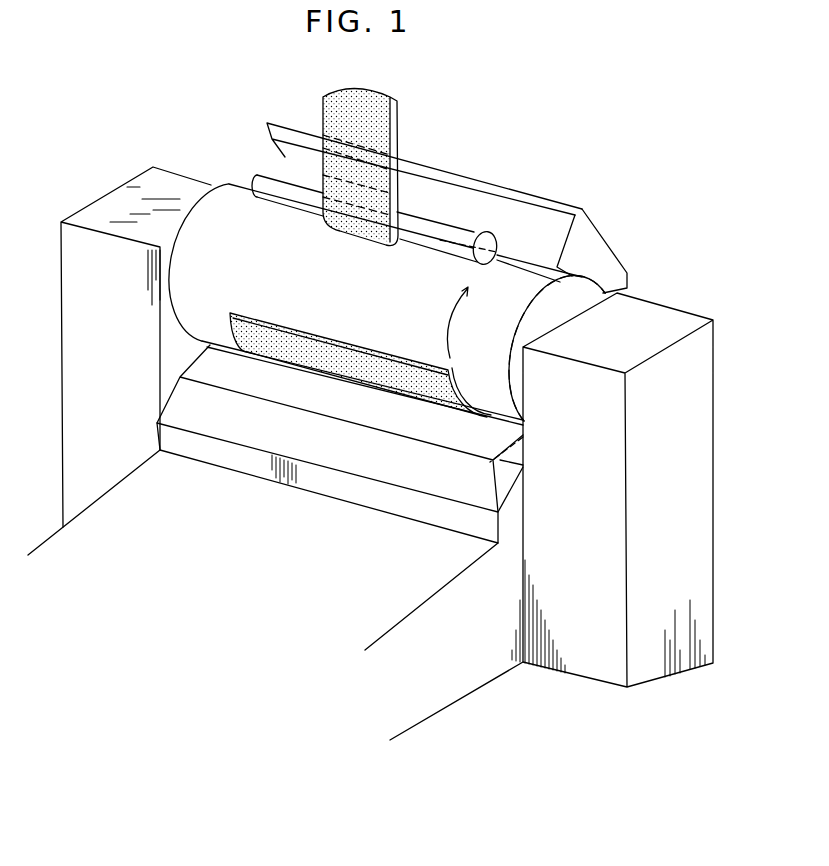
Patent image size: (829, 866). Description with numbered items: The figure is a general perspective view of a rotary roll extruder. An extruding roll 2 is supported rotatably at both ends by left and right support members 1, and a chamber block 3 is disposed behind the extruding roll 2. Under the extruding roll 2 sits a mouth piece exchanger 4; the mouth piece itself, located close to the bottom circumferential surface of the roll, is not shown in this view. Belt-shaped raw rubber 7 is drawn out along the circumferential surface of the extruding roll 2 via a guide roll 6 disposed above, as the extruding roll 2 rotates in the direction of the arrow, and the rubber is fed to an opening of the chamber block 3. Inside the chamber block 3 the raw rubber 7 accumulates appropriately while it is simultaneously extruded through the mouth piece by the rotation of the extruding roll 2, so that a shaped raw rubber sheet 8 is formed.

The support member 1 is at (108, 190).
The extruding roll 2 is at (229, 196).
The chamber block 3 is at (622, 226).
The mouth piece exchanger 4 is at (470, 677).
The guide roll 6 is at (466, 232).
The raw rubber 7 is at (397, 127).
The shaped raw rubber sheet 8 is at (345, 373).